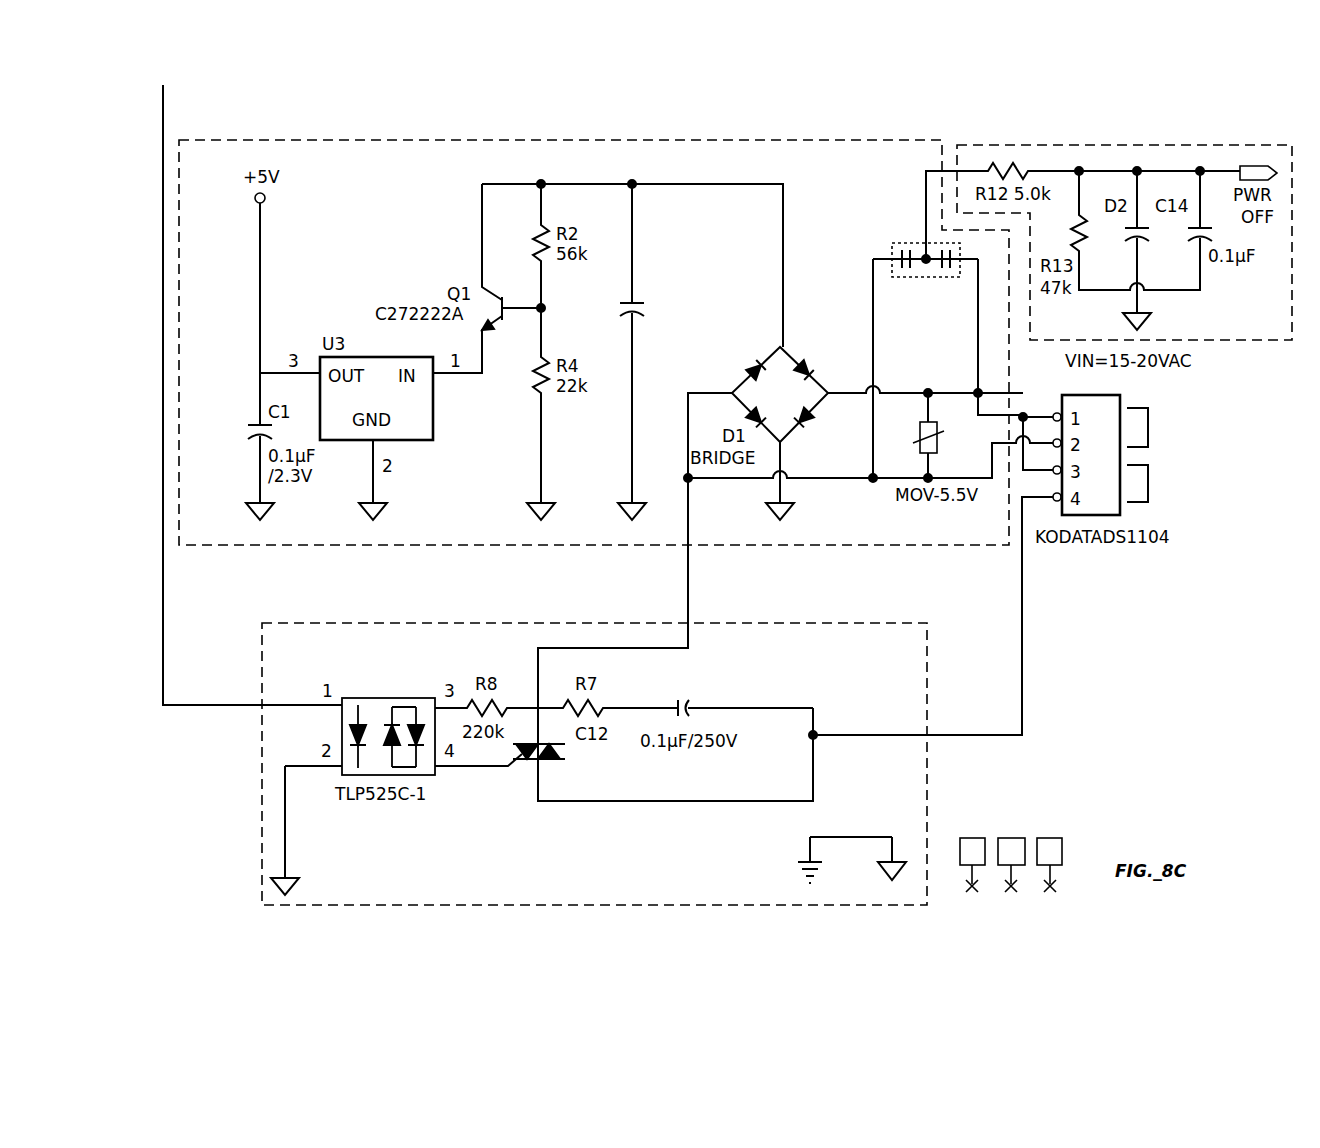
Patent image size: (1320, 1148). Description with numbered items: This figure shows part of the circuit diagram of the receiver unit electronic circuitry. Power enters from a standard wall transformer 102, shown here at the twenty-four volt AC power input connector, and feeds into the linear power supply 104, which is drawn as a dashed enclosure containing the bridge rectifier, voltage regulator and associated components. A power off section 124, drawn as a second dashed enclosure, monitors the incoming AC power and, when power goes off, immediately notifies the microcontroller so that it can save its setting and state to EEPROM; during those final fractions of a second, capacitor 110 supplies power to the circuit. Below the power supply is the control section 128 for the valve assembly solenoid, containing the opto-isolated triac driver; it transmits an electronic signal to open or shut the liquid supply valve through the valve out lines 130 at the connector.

The linear power supply 104 is at (900, 146).
The power off section 124 is at (1118, 152).
The capacitor 110 is at (645, 287).
The standard wall transformer 102 is at (1200, 402).
The valve out lines 130 is at (1200, 507).
The control section 128 is at (268, 678).